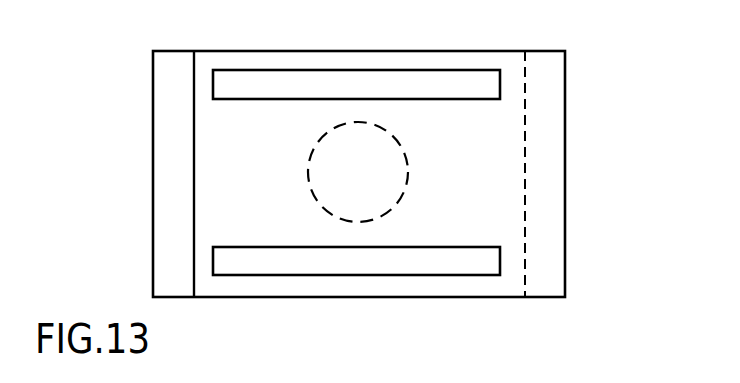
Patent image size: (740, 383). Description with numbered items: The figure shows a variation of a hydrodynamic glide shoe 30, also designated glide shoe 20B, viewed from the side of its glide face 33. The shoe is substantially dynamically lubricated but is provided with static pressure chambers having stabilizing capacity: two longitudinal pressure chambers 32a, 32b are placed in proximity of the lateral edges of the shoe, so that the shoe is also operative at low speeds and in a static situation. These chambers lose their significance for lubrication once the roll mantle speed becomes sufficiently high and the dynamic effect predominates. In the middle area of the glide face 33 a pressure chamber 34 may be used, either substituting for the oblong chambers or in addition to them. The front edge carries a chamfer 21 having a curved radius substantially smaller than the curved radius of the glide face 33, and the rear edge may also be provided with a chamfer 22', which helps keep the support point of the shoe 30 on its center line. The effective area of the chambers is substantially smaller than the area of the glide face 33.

The glide shoe 20B is at (205, 123).
The chamfer 21 is at (162, 151).
The chamfer 22' is at (571, 174).
The hydrodynamic glide shoe 30 is at (504, 185).
The longitudinal pressure chamber 32a is at (445, 77).
The longitudinal pressure chamber 32b is at (474, 266).
The glide face 33 is at (467, 121).
The pressure chamber 34 is at (316, 200).